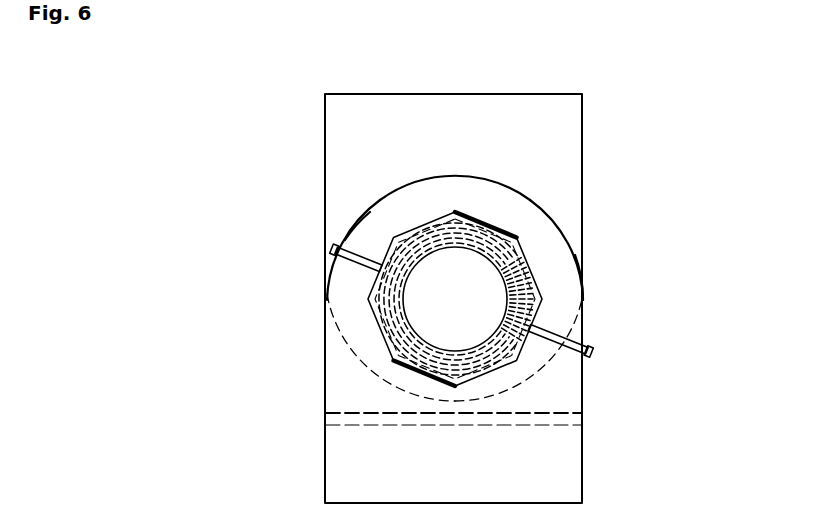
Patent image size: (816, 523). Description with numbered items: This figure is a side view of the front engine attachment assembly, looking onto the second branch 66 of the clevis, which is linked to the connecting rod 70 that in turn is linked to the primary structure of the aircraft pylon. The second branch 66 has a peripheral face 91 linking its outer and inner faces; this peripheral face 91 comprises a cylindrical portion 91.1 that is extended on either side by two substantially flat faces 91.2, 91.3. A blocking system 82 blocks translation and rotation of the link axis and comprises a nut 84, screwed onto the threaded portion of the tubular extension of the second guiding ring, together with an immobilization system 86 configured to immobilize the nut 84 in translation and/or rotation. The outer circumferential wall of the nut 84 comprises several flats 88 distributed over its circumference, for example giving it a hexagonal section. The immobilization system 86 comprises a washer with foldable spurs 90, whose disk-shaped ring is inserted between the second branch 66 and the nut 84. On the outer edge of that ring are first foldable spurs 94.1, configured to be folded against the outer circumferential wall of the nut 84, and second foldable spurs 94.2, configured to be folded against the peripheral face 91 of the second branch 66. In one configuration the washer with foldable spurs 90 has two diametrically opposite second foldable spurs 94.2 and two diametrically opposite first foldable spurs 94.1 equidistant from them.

The second branch 66 is at (353, 472).
The connecting rod 70 is at (533, 144).
The blocking system 82 is at (386, 230).
The nut 84 is at (515, 256).
The immobilization system 86 is at (337, 247).
The flat 88 is at (423, 227).
The washer with foldable spurs 90 is at (582, 293).
The peripheral face 91 is at (440, 230).
The cylindrical portion 91.1 is at (388, 190).
The flat face 91.2 is at (326, 378).
The flat face 91.3 is at (583, 387).
The first foldable spur 94.1 is at (500, 230).
The second foldable spur 94.2 is at (456, 279).